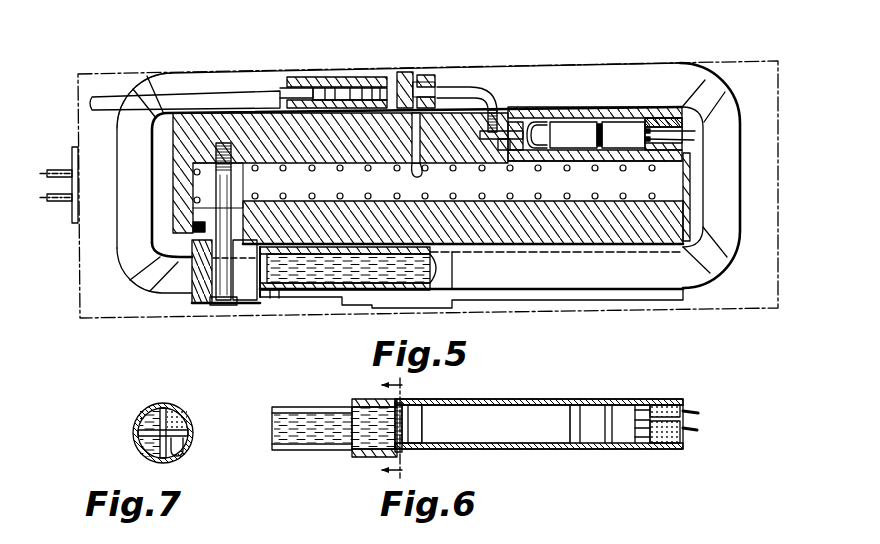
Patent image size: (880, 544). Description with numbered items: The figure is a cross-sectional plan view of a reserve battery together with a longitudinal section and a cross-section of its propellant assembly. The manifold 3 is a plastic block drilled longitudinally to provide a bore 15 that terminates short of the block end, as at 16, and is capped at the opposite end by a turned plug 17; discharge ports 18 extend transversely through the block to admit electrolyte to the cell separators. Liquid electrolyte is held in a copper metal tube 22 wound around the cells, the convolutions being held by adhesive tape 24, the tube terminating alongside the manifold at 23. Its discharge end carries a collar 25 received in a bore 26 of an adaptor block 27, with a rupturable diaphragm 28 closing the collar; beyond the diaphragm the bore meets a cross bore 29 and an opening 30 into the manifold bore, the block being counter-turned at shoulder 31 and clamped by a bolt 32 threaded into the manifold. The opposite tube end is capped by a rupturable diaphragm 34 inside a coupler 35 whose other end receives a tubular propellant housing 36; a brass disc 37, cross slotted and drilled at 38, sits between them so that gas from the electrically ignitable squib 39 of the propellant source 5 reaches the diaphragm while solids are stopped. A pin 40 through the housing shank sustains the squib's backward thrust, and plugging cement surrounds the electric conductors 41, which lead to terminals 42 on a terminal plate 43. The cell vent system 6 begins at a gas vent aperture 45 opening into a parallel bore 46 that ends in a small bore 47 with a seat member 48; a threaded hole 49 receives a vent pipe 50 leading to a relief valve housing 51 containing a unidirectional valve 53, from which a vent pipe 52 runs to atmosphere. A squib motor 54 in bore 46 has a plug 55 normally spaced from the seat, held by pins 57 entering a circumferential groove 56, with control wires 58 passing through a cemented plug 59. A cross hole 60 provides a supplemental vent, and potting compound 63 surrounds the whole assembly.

In FIG. 5, the manifold 3 is at (640, 200).
In FIG. 5, the propellant source 5 is at (591, 290).
In FIG. 6, the propellant source 5 is at (565, 400).
In FIG. 5, the cell vent system 6 is at (612, 122).
In FIG. 5, the bore 15 is at (690, 184).
In FIG. 5, the end of bore 16 is at (197, 174).
In FIG. 5, the turned plug 17 is at (692, 173).
In FIG. 5, the discharge ports 18 is at (343, 196).
In FIG. 5, the metal tube 22 is at (728, 207).
In FIG. 6, the metal tube 22 is at (272, 410).
In FIG. 5, the tube termination 23 is at (317, 300).
In FIG. 5, the adhesive tape 24 is at (712, 84).
In FIG. 5, the collar 25 is at (279, 300).
In FIG. 5, the bore 26 is at (270, 300).
In FIG. 5, the adaptor block 27 is at (200, 307).
In FIG. 5, the rupturable diaphragm 28 is at (257, 270).
In FIG. 5, the cross bore 29 is at (157, 252).
In FIG. 5, the opening 30 is at (235, 205).
In FIG. 5, the counter-turned shoulder 31 is at (197, 227).
In FIG. 5, the bolt 32 is at (233, 307).
In FIG. 6, the rupturable diaphragm 34 is at (393, 433).
In FIG. 6, the coupler 35 is at (378, 398).
In FIG. 7, the coupler 35 is at (145, 413).
In FIG. 6, the propellant housing 36 is at (512, 400).
In FIG. 6, the disc 37 is at (397, 456).
In FIG. 7, the disc 37 is at (176, 422).
In FIG. 6, the cross slots and drill holes 38 is at (407, 425).
In FIG. 7, the cross slots and drill holes 38 is at (182, 447).
In FIG. 6, the electrically ignitable squib 39 is at (553, 428).
In FIG. 6, the pin 40 is at (696, 408).
In FIG. 6, the electric conductors 41 is at (691, 432).
In FIG. 5, the terminals 42 is at (63, 201).
In FIG. 5, the terminal plate 43 is at (68, 158).
In FIG. 5, the gas vent aperture 45 is at (578, 168).
In FIG. 5, the bore 46 is at (638, 118).
In FIG. 5, the small bore 47 is at (494, 141).
In FIG. 5, the seat member 48 is at (513, 127).
In FIG. 5, the hole 49 is at (505, 124).
In FIG. 5, the vent pipe 50 is at (486, 89).
In FIG. 5, the pressure relief valve housing 51 is at (423, 74).
In FIG. 5, the vent pipe 52 is at (213, 95).
In FIG. 5, the valve 53 is at (367, 77).
In FIG. 5, the motor 54 is at (563, 124).
In FIG. 5, the plug 55 is at (526, 163).
In FIG. 5, the circumferential groove 56 is at (591, 137).
In FIG. 5, the pins 57 is at (600, 123).
In FIG. 5, the control wires 58 is at (693, 130).
In FIG. 5, the plug 59 is at (682, 118).
In FIG. 5, the cross hole 60 is at (412, 142).
In FIG. 5, the potting compound 63 is at (730, 307).